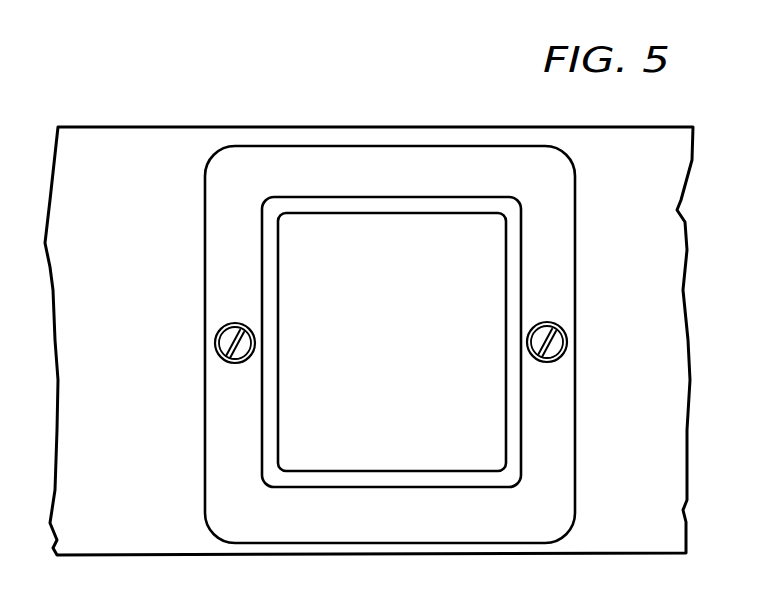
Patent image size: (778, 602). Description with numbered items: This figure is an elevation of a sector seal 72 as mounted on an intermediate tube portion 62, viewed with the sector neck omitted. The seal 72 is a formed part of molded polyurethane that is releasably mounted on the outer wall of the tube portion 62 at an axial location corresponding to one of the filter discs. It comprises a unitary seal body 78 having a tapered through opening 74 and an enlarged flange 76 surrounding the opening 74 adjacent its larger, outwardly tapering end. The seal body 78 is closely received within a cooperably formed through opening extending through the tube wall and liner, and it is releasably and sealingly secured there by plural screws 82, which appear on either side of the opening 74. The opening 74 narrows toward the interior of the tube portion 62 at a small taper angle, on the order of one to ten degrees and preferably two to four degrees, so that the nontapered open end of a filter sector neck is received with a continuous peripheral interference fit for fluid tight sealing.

The intermediate tube portion 62 is at (180, 137).
The sector seal 72 is at (337, 145).
The tapered through opening 74 is at (390, 203).
The enlarged flange 76 is at (485, 158).
The seal body 78 is at (220, 242).
The screws 82 is at (235, 325).